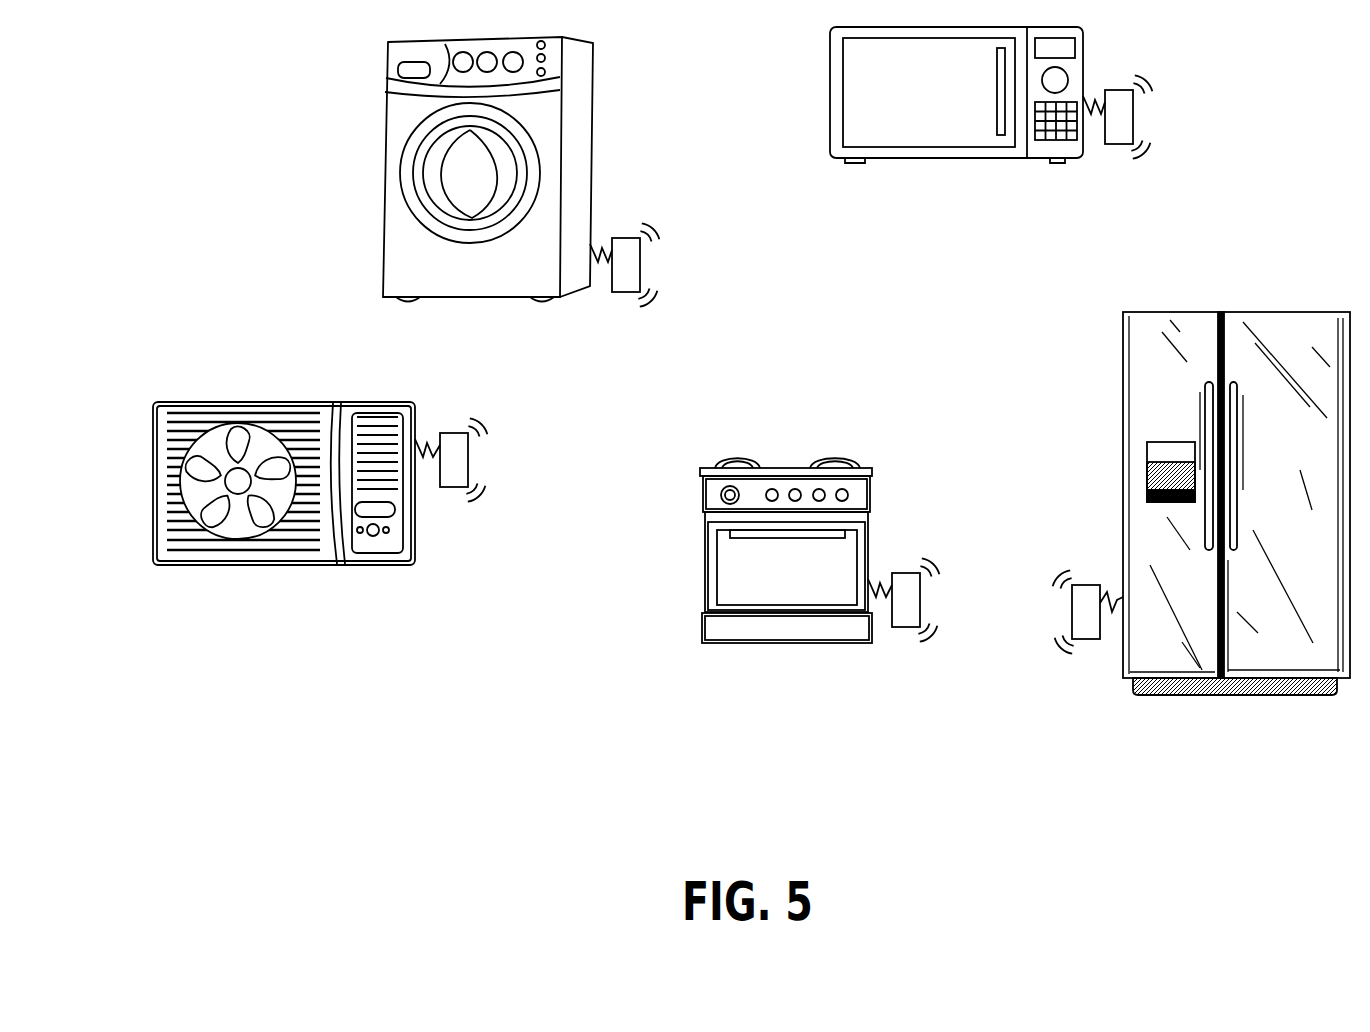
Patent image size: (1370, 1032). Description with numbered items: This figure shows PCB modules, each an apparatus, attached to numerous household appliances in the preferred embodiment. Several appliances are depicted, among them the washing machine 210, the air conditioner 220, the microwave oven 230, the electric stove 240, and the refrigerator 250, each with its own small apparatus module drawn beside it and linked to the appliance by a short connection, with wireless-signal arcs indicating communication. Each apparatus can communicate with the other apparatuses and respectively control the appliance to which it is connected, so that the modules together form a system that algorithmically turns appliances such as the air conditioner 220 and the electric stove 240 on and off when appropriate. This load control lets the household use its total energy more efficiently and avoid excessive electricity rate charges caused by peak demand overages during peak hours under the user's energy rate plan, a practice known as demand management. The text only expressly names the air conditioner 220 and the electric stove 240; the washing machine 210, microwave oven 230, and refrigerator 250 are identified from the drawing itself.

The washing machine 210 is at (590, 160).
The air conditioner 220 is at (417, 553).
The microwave oven 230 is at (1085, 37).
The electric stove 240 is at (872, 490).
The refrigerator 250 is at (1118, 394).